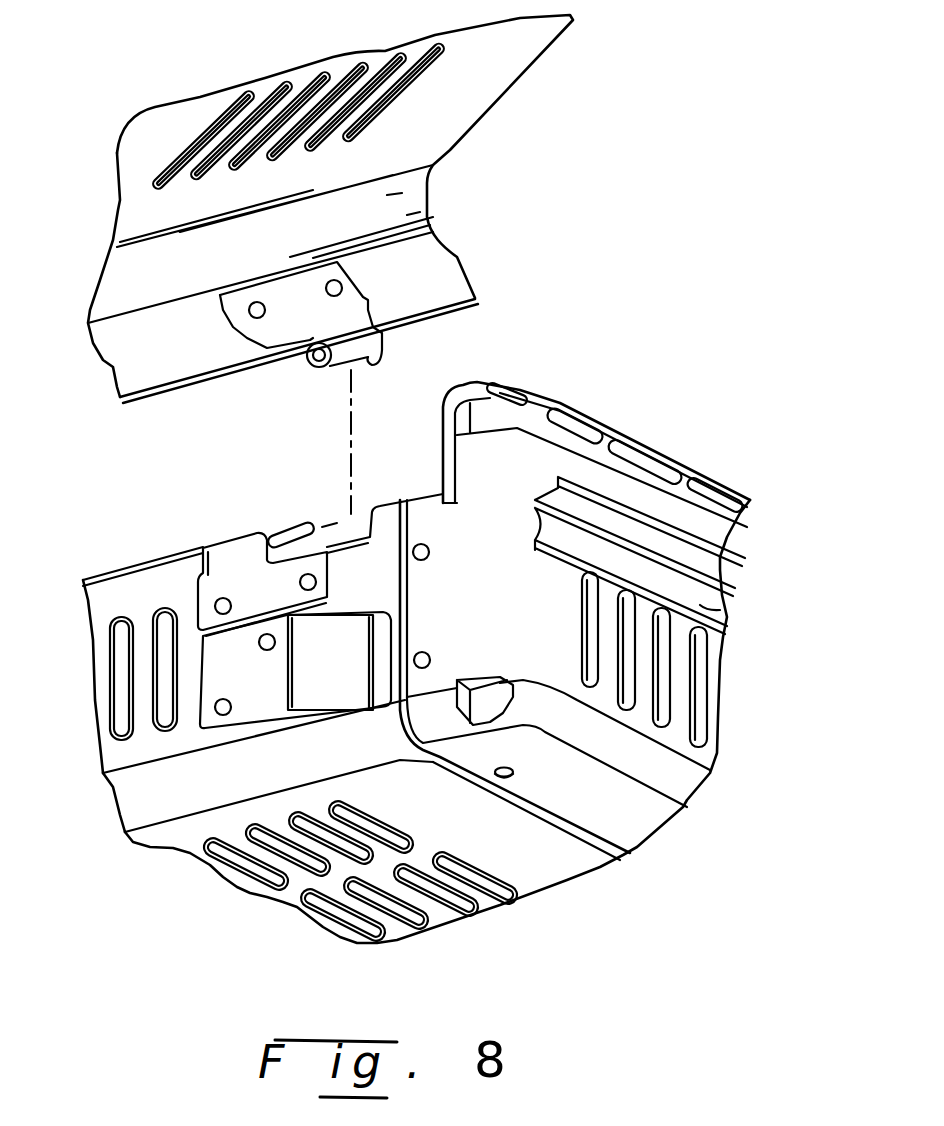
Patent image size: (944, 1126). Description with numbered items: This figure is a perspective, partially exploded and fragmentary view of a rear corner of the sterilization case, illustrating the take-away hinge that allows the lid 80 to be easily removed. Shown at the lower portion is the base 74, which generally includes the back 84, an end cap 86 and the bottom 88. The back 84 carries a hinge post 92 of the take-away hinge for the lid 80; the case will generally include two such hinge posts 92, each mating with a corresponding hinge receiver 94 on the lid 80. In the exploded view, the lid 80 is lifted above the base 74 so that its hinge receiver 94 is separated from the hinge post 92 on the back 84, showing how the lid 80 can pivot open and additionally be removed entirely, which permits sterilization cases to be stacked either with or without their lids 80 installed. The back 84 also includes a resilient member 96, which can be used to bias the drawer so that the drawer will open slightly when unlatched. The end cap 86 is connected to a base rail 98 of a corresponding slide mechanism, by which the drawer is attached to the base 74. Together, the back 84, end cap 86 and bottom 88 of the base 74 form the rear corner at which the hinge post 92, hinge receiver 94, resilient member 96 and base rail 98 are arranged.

The base 74 is at (737, 722).
The lid 80 is at (503, 60).
The back 84 is at (113, 593).
The end cap 86 is at (697, 467).
The bottom 88 is at (523, 868).
The hinge post 92 is at (233, 547).
The hinge receiver 94 is at (378, 356).
The resilient member 96 is at (330, 685).
The base rail 98 is at (693, 603).